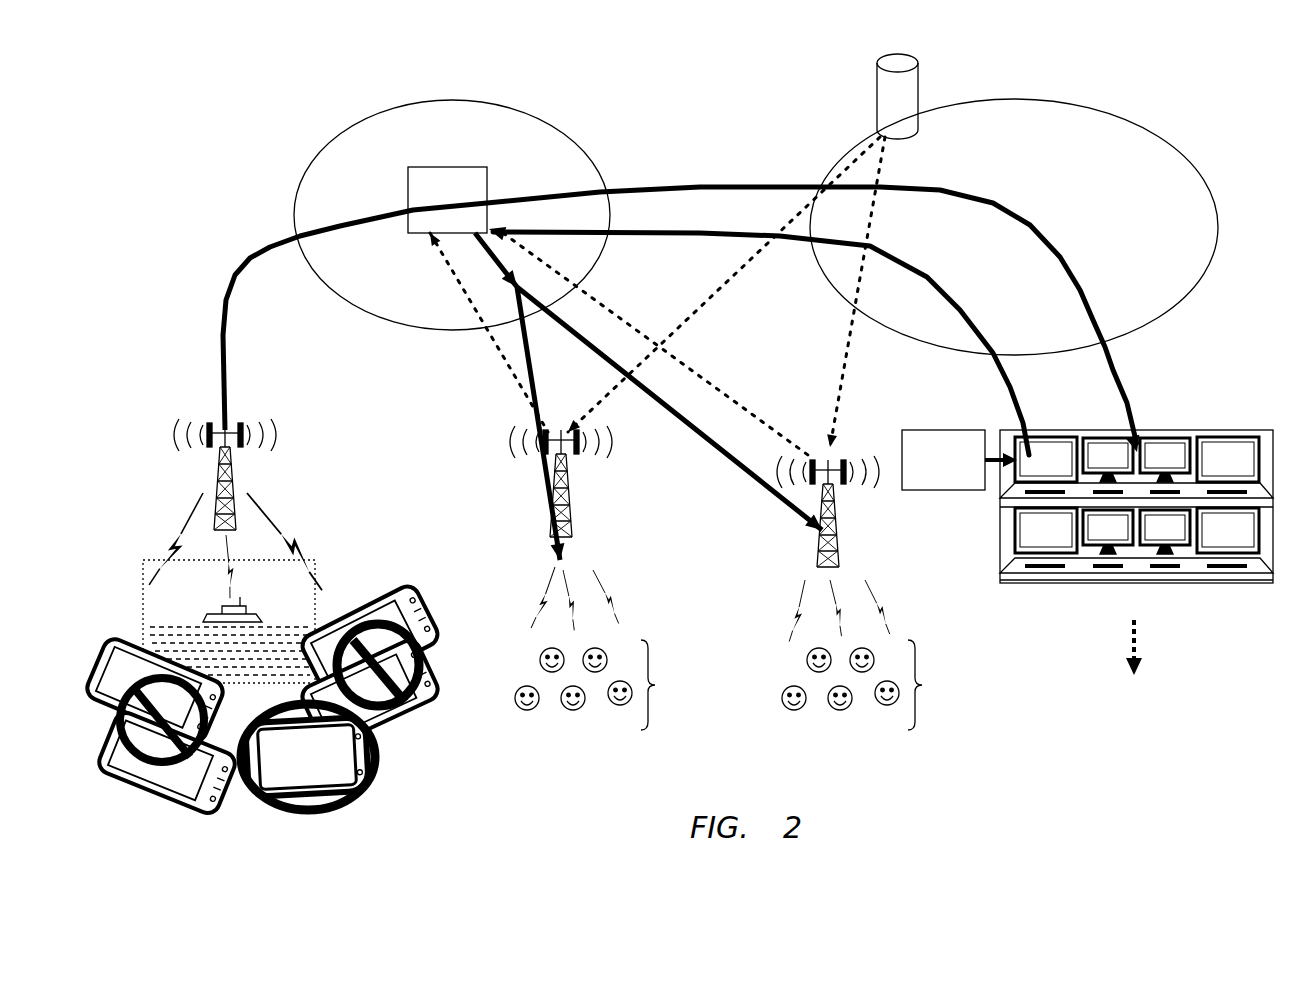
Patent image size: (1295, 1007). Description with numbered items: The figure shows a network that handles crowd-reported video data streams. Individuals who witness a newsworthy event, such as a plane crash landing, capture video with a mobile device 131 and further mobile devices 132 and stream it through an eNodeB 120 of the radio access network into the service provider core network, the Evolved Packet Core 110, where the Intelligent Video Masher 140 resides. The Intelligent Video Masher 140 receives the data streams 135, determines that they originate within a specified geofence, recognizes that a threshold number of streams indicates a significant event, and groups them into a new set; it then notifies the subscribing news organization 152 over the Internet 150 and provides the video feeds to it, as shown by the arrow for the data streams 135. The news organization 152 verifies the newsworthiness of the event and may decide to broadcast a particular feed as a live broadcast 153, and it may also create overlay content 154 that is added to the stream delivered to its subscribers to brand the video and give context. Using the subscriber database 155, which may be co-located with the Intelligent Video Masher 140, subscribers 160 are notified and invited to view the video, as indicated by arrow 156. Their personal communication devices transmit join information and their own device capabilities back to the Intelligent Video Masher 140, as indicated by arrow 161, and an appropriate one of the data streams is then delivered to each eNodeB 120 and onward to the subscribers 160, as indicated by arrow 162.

The Evolved Packet Core 110 is at (548, 170).
The eNodeB 120 is at (240, 478).
The mobile device 131 is at (343, 804).
The mobile communication gateway 132 is at (152, 787).
The data streams 135 is at (219, 345).
The Intelligent Video Masher 140 is at (408, 200).
The Internet 150 is at (1158, 131).
The news organization 152 is at (1230, 429).
The live broadcast 153 is at (1131, 676).
The overlay content 154 is at (940, 429).
The subscriber database 155 is at (877, 93).
The invitation notification 156 is at (722, 290).
The subscribers 160 is at (743, 685).
The join information 161 is at (600, 303).
The data stream delivery 162 is at (542, 465).